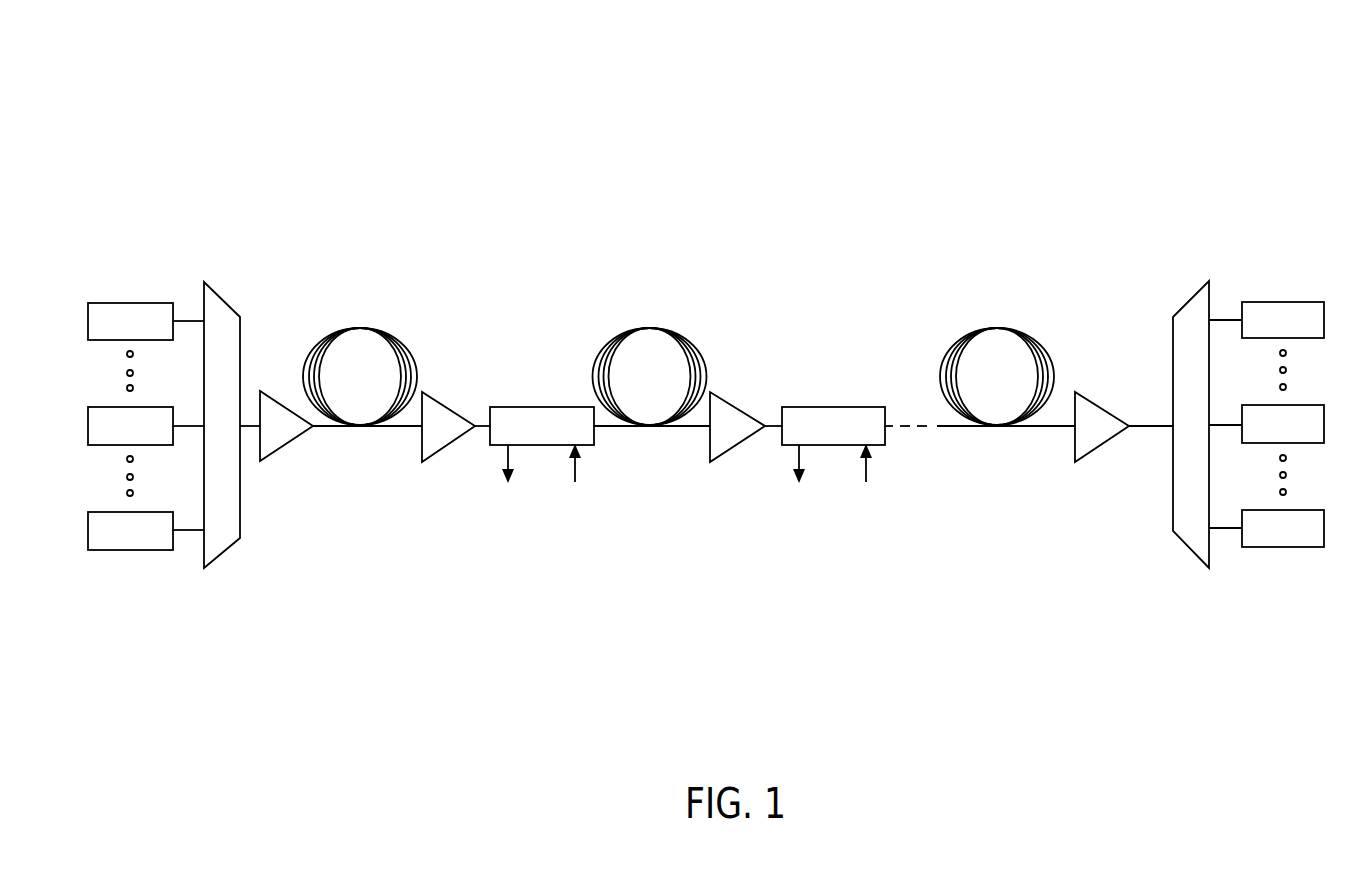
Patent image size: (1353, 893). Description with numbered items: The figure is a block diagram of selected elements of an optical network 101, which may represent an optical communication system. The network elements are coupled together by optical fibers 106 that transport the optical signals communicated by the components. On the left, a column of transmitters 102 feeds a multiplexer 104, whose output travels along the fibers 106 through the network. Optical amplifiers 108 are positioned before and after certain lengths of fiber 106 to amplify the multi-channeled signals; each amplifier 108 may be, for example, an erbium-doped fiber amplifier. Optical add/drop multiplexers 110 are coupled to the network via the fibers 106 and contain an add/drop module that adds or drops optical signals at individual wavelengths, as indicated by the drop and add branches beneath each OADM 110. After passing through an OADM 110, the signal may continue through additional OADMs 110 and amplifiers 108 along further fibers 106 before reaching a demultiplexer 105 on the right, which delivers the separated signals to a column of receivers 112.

The optical network 101 is at (178, 43).
The transmitter 102 is at (116, 302).
The multiplexer 104 is at (221, 291).
The demultiplexer 105 is at (1194, 294).
The optical fiber 106 is at (353, 328).
The optical amplifier 108 is at (283, 447).
The optical add/drop multiplexer 110 is at (528, 407).
The receiver 112 is at (1298, 302).